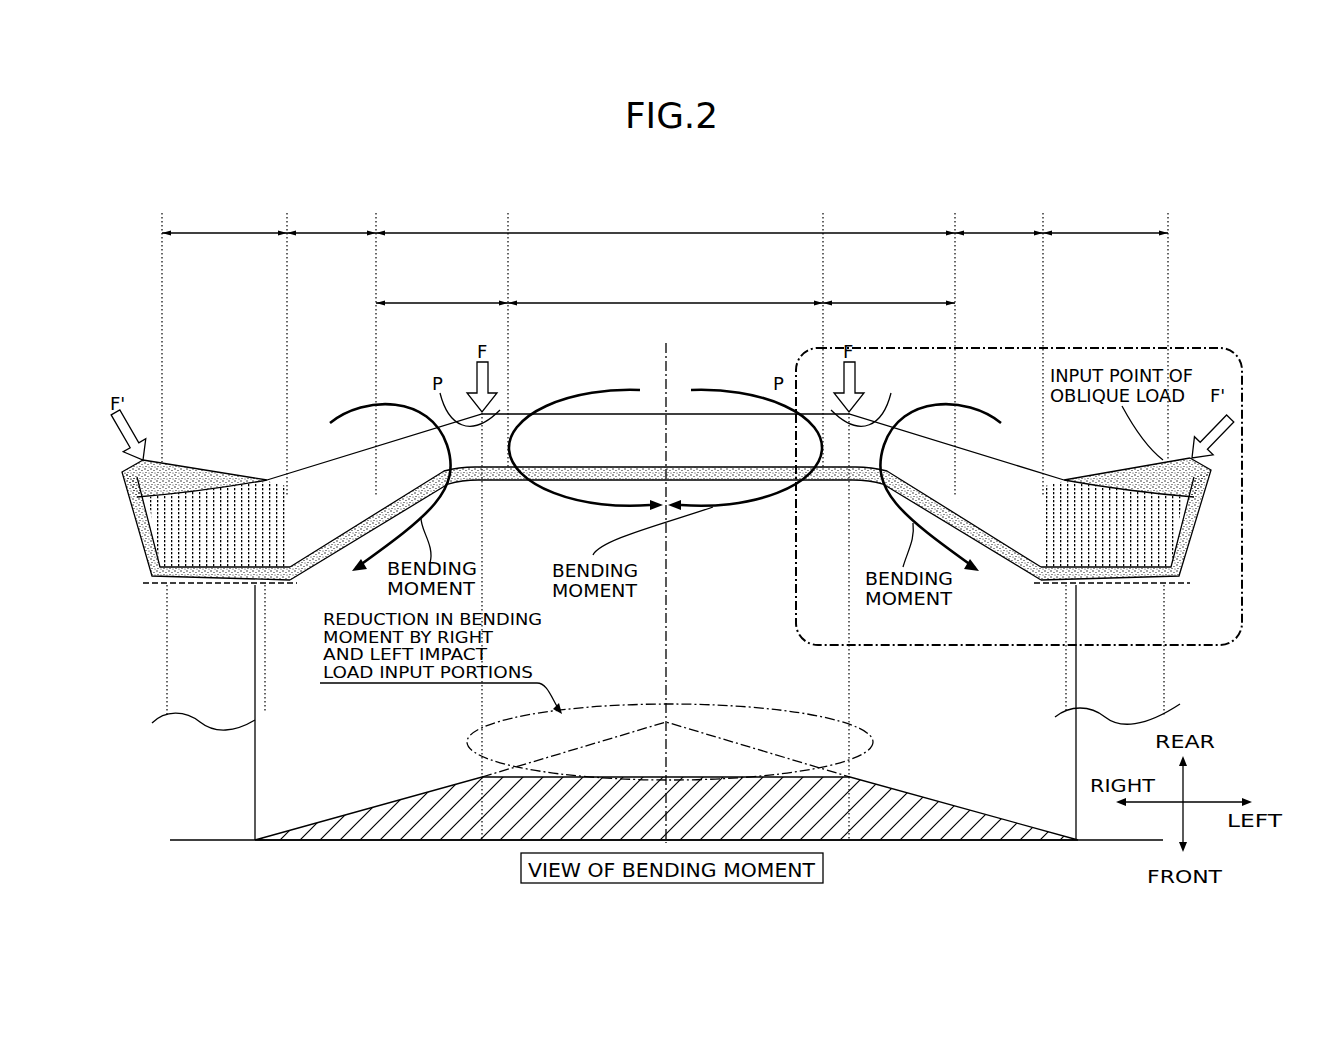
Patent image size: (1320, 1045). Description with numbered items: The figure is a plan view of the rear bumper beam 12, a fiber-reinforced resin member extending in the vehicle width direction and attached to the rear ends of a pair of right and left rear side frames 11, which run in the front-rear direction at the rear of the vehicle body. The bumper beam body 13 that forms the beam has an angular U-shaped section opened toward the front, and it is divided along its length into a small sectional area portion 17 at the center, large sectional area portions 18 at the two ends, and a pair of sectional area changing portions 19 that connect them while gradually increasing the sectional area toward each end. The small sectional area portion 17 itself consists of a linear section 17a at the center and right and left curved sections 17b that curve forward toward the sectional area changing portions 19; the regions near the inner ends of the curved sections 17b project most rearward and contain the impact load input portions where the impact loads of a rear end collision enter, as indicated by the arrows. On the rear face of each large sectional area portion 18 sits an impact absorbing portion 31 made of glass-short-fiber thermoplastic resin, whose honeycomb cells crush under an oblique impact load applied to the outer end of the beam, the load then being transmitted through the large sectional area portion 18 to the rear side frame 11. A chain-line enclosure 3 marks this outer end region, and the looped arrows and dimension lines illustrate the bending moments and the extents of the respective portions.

The bumper structure end portion 3 is at (788, 612).
The rear side frame 11 is at (165, 670).
The rear bumper beam 12 is at (546, 393).
The bumper beam body 13 is at (536, 484).
The small sectional area portion 17 is at (665, 222).
The linear section 17a is at (665, 293).
The curved section 17b is at (665, 283).
The large sectional area portion 18 is at (1128, 198).
The sectional area changing portion 19 is at (1000, 232).
The impact absorbing portion 31 is at (221, 470).